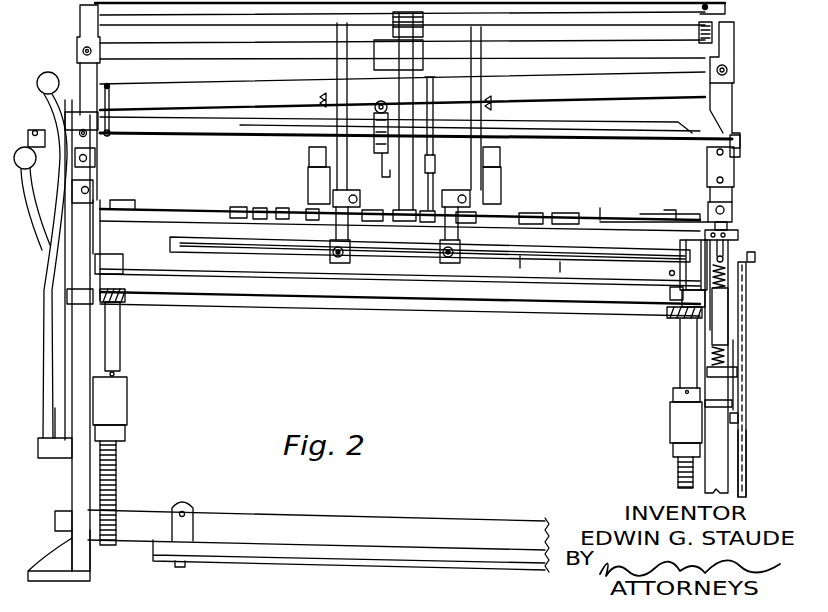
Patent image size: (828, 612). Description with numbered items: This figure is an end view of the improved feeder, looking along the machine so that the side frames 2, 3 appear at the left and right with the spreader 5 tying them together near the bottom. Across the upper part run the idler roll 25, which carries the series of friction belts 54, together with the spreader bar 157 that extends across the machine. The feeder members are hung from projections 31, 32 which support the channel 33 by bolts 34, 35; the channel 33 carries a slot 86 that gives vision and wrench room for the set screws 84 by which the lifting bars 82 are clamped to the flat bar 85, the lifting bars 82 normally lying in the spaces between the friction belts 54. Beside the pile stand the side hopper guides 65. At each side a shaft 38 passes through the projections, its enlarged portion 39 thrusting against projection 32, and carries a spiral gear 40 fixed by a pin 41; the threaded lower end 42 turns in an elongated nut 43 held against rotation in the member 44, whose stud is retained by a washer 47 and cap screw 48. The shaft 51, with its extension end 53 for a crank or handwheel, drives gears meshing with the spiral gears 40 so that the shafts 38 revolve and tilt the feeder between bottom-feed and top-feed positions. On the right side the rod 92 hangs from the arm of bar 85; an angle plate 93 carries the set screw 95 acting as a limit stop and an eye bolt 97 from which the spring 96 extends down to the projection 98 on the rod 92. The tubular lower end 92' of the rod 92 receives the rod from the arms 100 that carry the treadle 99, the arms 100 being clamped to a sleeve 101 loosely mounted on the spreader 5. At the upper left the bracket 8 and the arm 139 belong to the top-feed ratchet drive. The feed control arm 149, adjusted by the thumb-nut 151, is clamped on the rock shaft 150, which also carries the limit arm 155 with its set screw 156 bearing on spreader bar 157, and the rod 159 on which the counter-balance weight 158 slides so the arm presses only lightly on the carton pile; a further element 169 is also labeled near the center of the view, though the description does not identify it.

The side frame 2 is at (59, 541).
The side frame 3 is at (722, 476).
The spreader 5 is at (50, 532).
The bracket 8 is at (80, 70).
The idler roll 25 is at (172, 208).
The projection 31 is at (125, 210).
The projection 32 is at (116, 276).
The channel 33 is at (262, 272).
The bolt 34 is at (668, 210).
The bolt 35 is at (668, 274).
The shaft 38 is at (118, 360).
The enlarged portion 39 is at (640, 300).
The spiral gear 40 is at (118, 316).
The pin 41 is at (755, 296).
The threaded portion 42 is at (120, 473).
The elongated nut 43 is at (672, 400).
The member 44 is at (125, 408).
The washer 47 is at (758, 414).
The cap screw 48 is at (42, 428).
The shaft 51 is at (288, 313).
The extension end 53 is at (68, 298).
The friction belt 54 is at (268, 206).
The side hopper guide 65 is at (310, 160).
The lifting bar 82 is at (308, 192).
The set screw 84 is at (362, 268).
The flat bar 85 is at (530, 262).
The slot 86 is at (596, 208).
The rod 92 is at (767, 379).
The tubular lower end 92' is at (767, 463).
The angle plate 93 is at (748, 208).
The set screw 95 is at (748, 244).
The spring 96 is at (758, 345).
The eye bolt 97 is at (756, 262).
The projection 98 is at (748, 378).
The treadle 99 is at (352, 563).
The arm 100 is at (195, 522).
The sleeve 101 is at (305, 515).
The arm 139 is at (47, 207).
The feed control arm 149 is at (380, 150).
The rock shaft 150 is at (188, 128).
The thumb-nut 151 is at (380, 102).
The arm 155 is at (110, 100).
The set screw 156 is at (110, 88).
The spreader bar 157 is at (190, 92).
The weight 158 is at (92, 157).
The rod 159 is at (88, 141).
The rod 169 is at (436, 185).